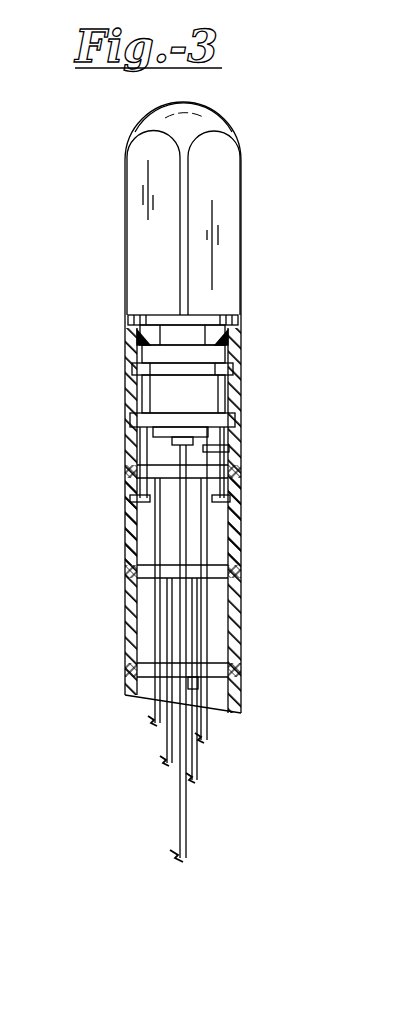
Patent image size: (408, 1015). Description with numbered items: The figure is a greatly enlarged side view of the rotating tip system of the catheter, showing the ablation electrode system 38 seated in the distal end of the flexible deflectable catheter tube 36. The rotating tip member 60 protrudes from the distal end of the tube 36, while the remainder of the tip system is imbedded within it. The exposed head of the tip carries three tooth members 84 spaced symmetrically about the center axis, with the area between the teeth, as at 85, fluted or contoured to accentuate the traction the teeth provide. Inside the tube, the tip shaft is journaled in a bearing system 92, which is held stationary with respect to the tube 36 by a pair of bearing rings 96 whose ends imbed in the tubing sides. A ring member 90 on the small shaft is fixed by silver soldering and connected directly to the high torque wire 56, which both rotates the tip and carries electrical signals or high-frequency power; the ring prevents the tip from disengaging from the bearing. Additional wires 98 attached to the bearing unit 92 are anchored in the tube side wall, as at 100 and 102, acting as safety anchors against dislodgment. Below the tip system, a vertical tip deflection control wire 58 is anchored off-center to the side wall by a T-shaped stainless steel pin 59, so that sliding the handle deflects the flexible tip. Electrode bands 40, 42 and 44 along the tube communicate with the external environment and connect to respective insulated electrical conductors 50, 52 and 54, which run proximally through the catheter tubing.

The flexible distal catheter tube 36 is at (242, 612).
The ablation electrode system 38 is at (252, 309).
The electrode band 40 is at (125, 677).
The electrode band 42 is at (127, 578).
The electrode band 44 is at (128, 470).
The insulated electrical conductor 50 is at (197, 762).
The insulated electrical conductor 52 is at (160, 743).
The insulated electrical conductor 54 is at (143, 705).
The high torque wire 56 is at (177, 815).
The vertical tip deflection control wire 58 is at (207, 732).
The T-shaped stainless steel pin 59 is at (240, 455).
The rotating tip member 60 is at (246, 127).
The tooth member 84 is at (181, 230).
The fluted area between teeth 85 is at (143, 172).
The ring member 90 is at (235, 421).
The bearing system 92 is at (240, 368).
The bearing ring 96 is at (240, 347).
The safety anchor wire 98 is at (137, 440).
The wire anchor point 100 is at (125, 525).
The wire anchor point 102 is at (237, 533).